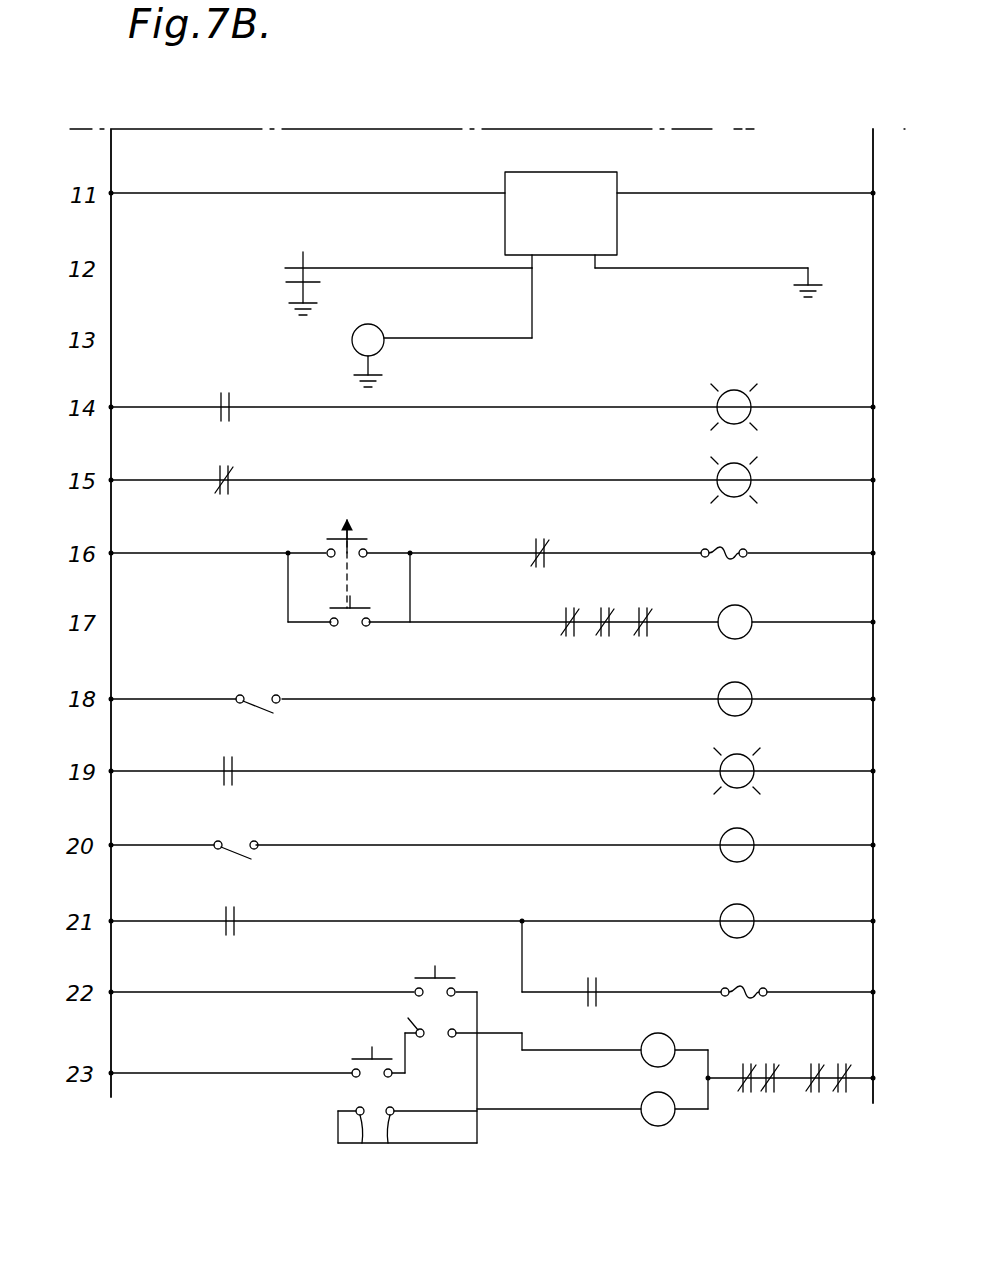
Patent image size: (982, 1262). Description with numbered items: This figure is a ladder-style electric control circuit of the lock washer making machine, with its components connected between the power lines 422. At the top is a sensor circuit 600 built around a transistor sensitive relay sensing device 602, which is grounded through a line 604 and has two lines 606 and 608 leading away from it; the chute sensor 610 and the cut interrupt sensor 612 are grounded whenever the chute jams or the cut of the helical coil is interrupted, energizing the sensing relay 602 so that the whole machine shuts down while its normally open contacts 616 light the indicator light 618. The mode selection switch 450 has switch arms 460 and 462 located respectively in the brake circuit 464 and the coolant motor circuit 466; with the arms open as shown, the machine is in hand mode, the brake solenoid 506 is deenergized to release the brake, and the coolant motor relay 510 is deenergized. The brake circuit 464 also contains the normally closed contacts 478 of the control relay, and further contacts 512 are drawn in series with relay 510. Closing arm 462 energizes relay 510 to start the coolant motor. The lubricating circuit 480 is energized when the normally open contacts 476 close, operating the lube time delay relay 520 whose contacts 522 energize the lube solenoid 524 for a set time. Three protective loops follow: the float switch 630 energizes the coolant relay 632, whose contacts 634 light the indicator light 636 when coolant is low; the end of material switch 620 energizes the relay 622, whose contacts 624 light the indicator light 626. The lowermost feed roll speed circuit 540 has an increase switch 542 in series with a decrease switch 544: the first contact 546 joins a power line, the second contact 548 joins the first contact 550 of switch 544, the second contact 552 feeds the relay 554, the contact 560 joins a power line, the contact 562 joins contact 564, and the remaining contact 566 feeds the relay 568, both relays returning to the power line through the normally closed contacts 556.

The sensor circuit 600 is at (395, 167).
The sensing relay 602 is at (530, 185).
The ground line 604 is at (684, 268).
The chute sensing line 606 is at (354, 268).
The cut interrupt sensing line 608 is at (446, 340).
The chute sensor 610 is at (285, 268).
The cut interrupt sensor 612 is at (366, 330).
The normally open contacts 616 is at (218, 402).
The indicator light 618 is at (730, 392).
The normally open contacts 624 is at (230, 467).
The indicator light 626 is at (725, 477).
The mode selection switch 450 is at (318, 547).
The switch arm 460 is at (338, 537).
The switch arm 462 is at (352, 627).
The brake circuit 464 is at (467, 548).
The coolant motor circuit 466 is at (452, 626).
The normally closed contacts 478 is at (543, 538).
The brake solenoid 506 is at (707, 548).
The coolant motor relay 510 is at (738, 618).
The normally closed contacts 512 is at (640, 635).
The normally open switch 630 is at (242, 694).
The coolant relay 632 is at (740, 705).
The normally open contacts 634 is at (233, 764).
The indicator light 636 is at (728, 768).
The normally open switch 620 is at (226, 843).
The end of material relay 622 is at (730, 840).
The normally open contacts 476 is at (230, 936).
The lubricating circuit 480 is at (575, 917).
The lube time delay relay 520 is at (735, 910).
The normally open contacts 522 is at (592, 980).
The lube solenoid 524 is at (742, 986).
The power line 422 is at (111, 957).
The increase switch 542 is at (426, 970).
The first contact 546 is at (415, 989).
The second contact 548 is at (460, 987).
The contact 560 is at (355, 1070).
The contact 562 is at (388, 1055).
The contact 564 is at (416, 1030).
The contact 566 is at (453, 1038).
The relay 568 is at (650, 1048).
The relay 554 is at (658, 1126).
The normally closed contacts 556 is at (840, 1092).
The decrease switch 544 is at (318, 1104).
The first contact 550 is at (360, 1144).
The second contact 552 is at (390, 1144).
The feed roll speed circuit 540 is at (510, 1135).